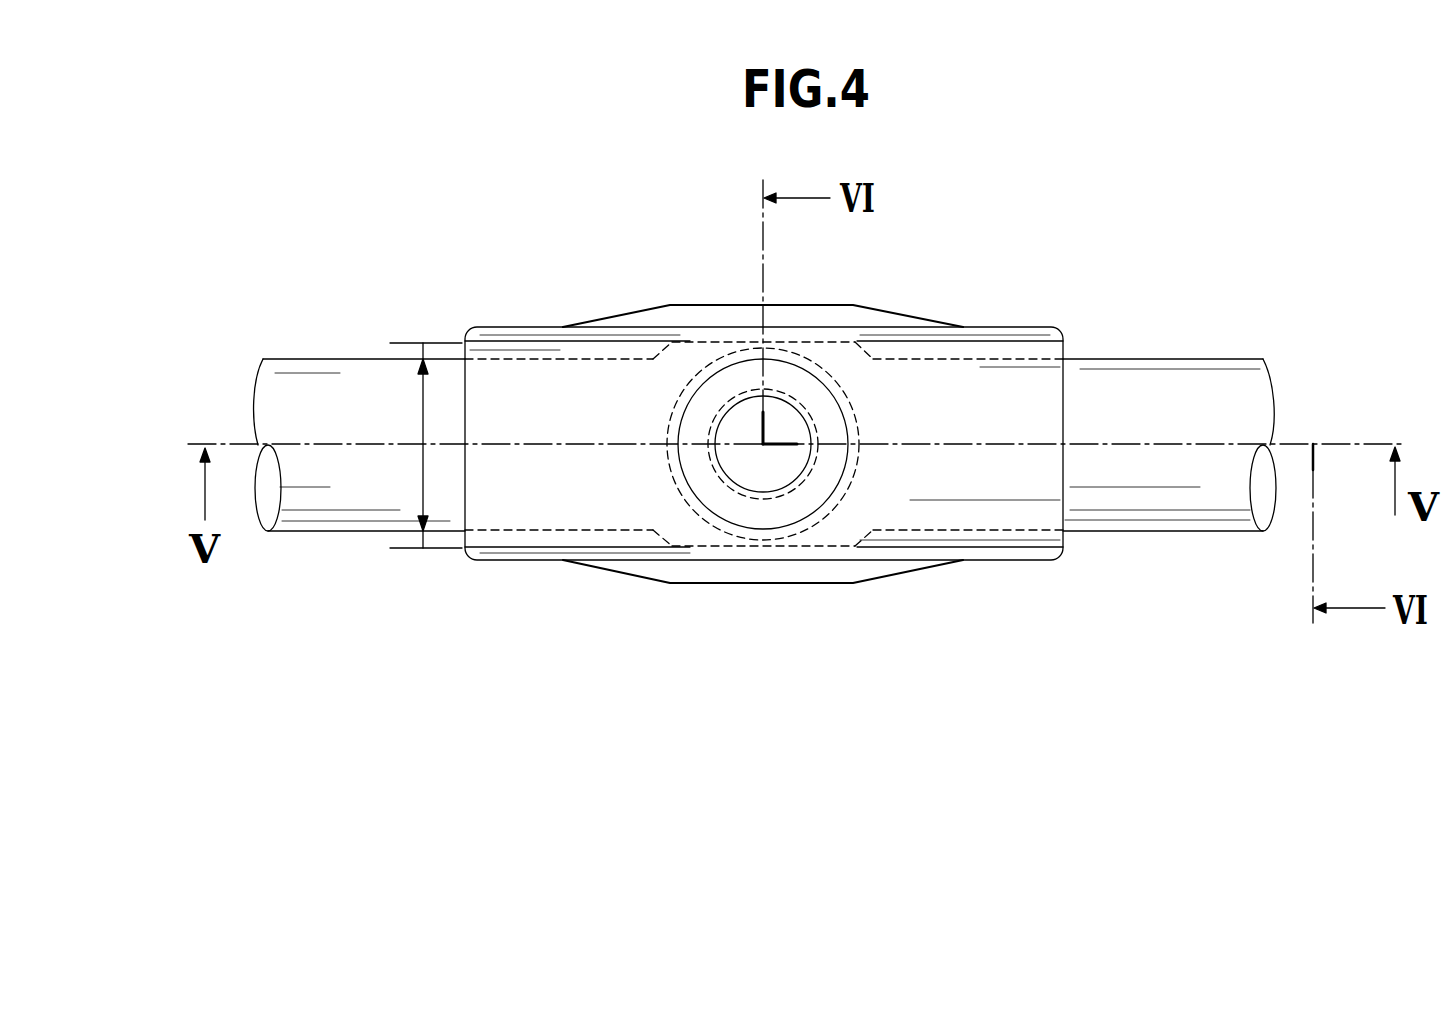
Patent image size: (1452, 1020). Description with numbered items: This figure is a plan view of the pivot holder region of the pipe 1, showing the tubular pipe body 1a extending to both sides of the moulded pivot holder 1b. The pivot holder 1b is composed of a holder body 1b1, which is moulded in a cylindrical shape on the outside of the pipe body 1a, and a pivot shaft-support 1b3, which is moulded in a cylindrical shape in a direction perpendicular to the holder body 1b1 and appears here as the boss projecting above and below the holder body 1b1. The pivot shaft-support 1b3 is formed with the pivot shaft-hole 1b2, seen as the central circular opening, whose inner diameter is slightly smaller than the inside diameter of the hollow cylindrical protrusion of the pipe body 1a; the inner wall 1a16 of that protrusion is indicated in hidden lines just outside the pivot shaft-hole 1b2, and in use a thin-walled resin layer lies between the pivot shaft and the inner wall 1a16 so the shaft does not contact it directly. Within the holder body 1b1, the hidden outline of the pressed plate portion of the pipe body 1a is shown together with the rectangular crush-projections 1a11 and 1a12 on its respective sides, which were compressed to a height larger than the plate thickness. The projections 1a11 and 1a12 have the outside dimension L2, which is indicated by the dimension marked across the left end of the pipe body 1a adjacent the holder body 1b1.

The pipe 1 is at (1176, 359).
The pipe body 1a is at (347, 520).
The pivot holder 1b is at (1035, 327).
The holder body 1b1 is at (520, 327).
The pivot shaft-hole 1b2 is at (720, 472).
The pivot shaft-support 1b3 is at (710, 372).
The crush-projection 1a11 is at (823, 536).
The crush-projection 1a12 is at (820, 343).
The inner wall 1a16 is at (815, 458).
The outside dimension L2 is at (423, 408).